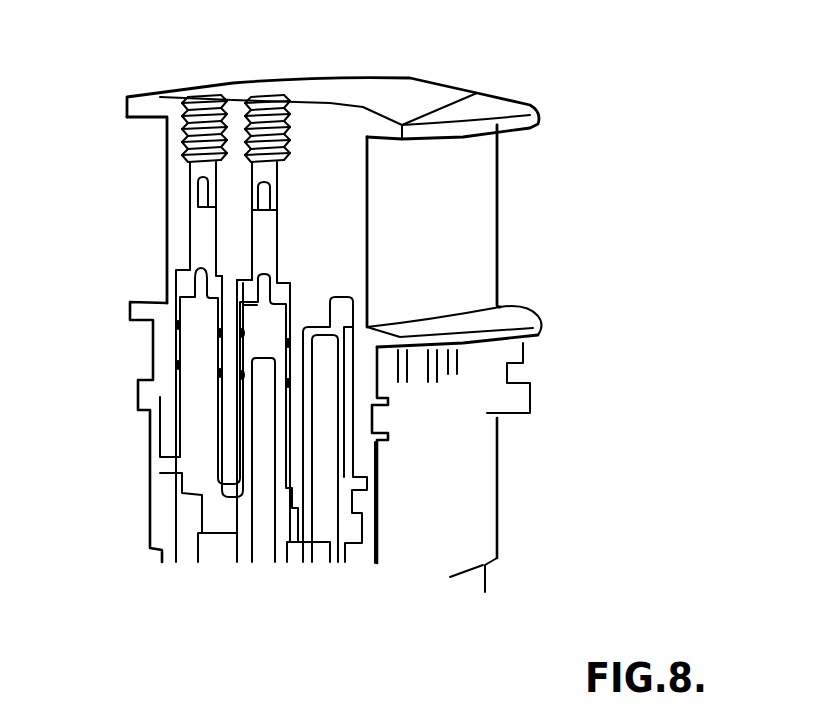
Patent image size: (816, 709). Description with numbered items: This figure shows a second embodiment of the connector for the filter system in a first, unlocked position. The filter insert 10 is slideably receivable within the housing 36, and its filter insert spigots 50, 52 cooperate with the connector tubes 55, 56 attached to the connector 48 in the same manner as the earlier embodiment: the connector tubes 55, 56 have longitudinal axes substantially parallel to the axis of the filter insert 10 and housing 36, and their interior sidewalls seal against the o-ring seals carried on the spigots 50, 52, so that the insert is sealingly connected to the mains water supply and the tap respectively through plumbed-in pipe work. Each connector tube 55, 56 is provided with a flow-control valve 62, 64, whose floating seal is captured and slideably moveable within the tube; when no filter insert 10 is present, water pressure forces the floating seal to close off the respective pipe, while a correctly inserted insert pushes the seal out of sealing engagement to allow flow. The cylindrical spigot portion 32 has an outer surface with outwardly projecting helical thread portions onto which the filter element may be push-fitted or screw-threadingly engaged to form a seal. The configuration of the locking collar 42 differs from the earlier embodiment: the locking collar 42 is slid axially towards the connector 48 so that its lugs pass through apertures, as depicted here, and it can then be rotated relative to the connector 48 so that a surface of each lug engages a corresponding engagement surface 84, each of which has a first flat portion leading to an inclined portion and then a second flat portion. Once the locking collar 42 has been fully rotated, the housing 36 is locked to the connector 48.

The filter insert 10 is at (217, 552).
The cylindrical spigot portion 32 is at (508, 418).
The housing 36 is at (467, 583).
The locking collar 42 is at (430, 487).
The connector 48 is at (433, 217).
The filter insert spigot 50 is at (190, 423).
The filter insert spigot 52 is at (250, 398).
The connector tube 55 is at (200, 120).
The connector tube 56 is at (257, 127).
The flow-control valve 62 is at (203, 218).
The flow-control valve 64 is at (265, 228).
The engagement surface 84 is at (440, 377).